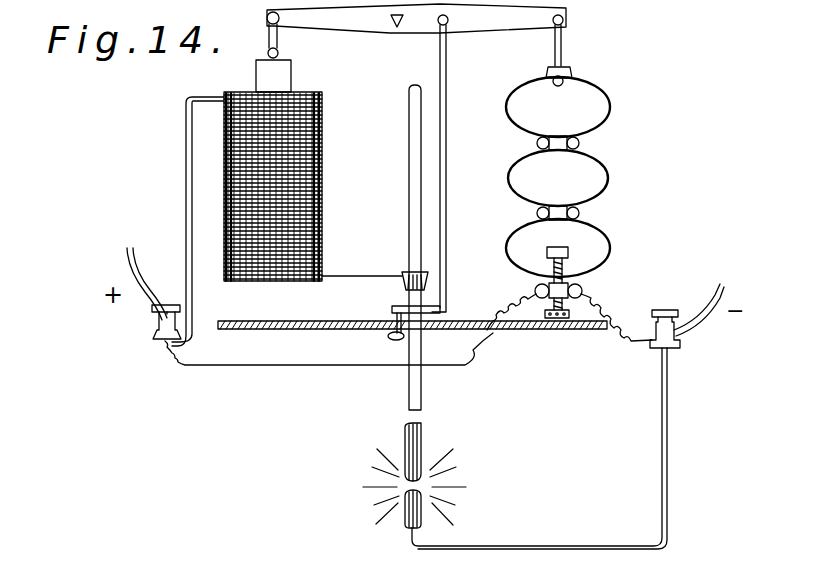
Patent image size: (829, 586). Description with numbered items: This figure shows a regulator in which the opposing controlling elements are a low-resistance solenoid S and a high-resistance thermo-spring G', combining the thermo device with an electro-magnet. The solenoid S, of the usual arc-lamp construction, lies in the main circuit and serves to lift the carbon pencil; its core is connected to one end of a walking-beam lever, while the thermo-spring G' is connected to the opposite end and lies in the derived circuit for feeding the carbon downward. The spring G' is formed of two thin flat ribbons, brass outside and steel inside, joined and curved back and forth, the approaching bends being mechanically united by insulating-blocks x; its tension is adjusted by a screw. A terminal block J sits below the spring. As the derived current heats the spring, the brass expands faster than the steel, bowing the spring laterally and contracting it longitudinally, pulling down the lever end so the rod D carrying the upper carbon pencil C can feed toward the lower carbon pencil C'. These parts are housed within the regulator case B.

The case B is at (330, 0).
The solenoid S is at (283, 186).
The rod carrying the upper pencil D is at (406, 247).
The thermo-spring G' is at (558, 151).
The insulating-blocks x is at (558, 214).
The terminal block J is at (561, 315).
The upper carbon pencil C is at (420, 452).
The lower carbon pencil C' is at (422, 510).